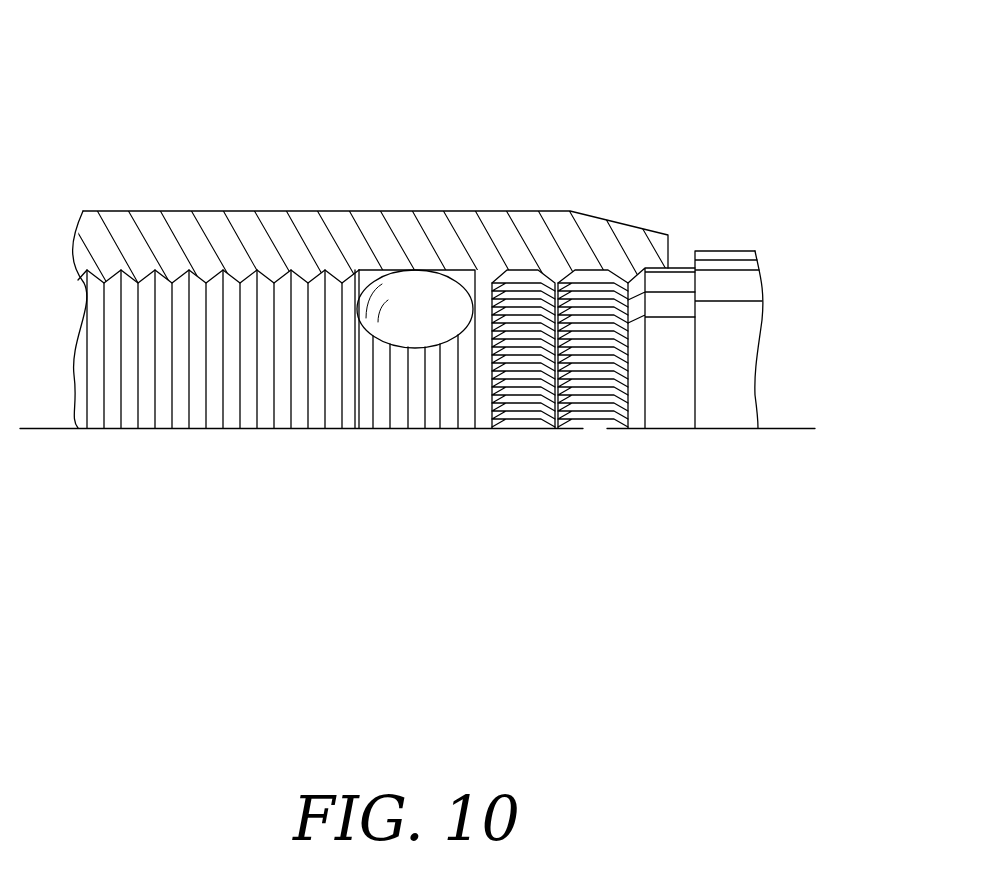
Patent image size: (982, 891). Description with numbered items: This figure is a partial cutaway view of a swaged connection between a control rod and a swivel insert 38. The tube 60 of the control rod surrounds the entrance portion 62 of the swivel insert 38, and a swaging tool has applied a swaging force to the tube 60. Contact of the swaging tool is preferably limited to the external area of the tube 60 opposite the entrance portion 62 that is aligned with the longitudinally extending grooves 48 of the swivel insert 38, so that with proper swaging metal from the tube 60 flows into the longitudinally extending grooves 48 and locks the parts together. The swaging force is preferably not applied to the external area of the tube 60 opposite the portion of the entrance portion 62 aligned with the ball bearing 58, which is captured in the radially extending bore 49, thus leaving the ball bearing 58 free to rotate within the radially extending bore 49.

The tube 60 is at (137, 211).
The radially extending bore 49 is at (367, 280).
The ball bearing 58 is at (418, 300).
The entrance portion 62 is at (490, 262).
The longitudinally extending grooves 48 is at (588, 418).
The swivel insert 38 is at (740, 277).